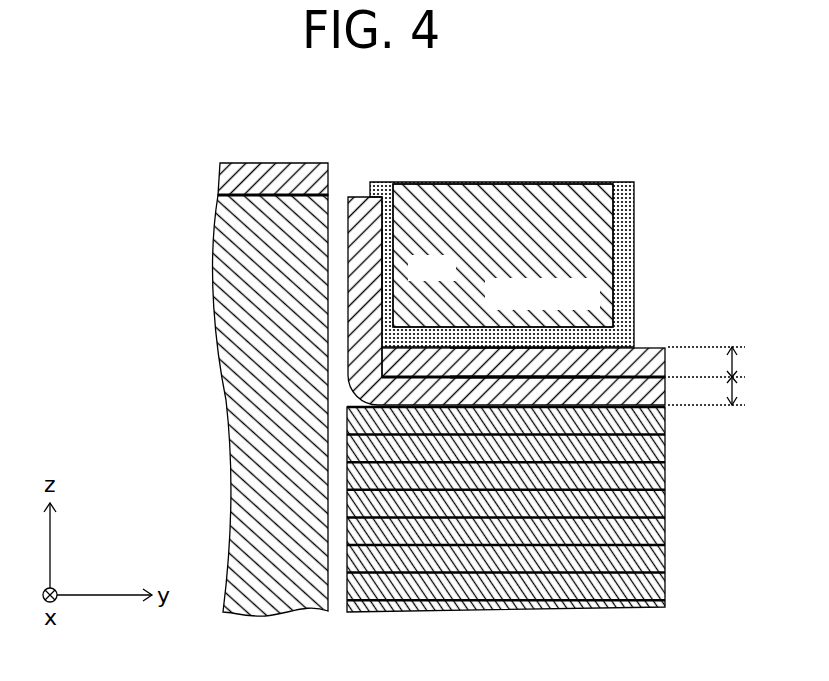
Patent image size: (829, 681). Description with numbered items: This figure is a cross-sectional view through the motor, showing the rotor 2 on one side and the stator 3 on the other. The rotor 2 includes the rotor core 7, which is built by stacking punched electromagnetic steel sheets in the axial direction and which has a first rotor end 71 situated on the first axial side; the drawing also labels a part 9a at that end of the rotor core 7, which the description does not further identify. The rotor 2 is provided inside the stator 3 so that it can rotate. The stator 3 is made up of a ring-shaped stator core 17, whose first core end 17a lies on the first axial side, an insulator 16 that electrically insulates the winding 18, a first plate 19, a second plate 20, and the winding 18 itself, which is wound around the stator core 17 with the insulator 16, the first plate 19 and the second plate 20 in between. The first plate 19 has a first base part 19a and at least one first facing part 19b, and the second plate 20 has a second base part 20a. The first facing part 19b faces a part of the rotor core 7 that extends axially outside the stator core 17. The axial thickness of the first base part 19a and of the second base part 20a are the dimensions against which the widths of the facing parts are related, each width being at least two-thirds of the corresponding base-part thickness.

The rotor 2 is at (199, 148).
The stator 3 is at (686, 233).
The rotor core 7 is at (216, 320).
The recording layer 9a is at (272, 178).
The first rotor end 71 is at (247, 188).
The insulator 16 is at (622, 215).
The stator core 17 is at (665, 530).
The first core end 17a is at (620, 402).
The winding 18 is at (492, 222).
The first plate 19 is at (660, 393).
The first base part 19a is at (510, 395).
The first facing part 19b is at (372, 265).
The second plate 20 is at (648, 347).
The second base part 20a is at (566, 368).